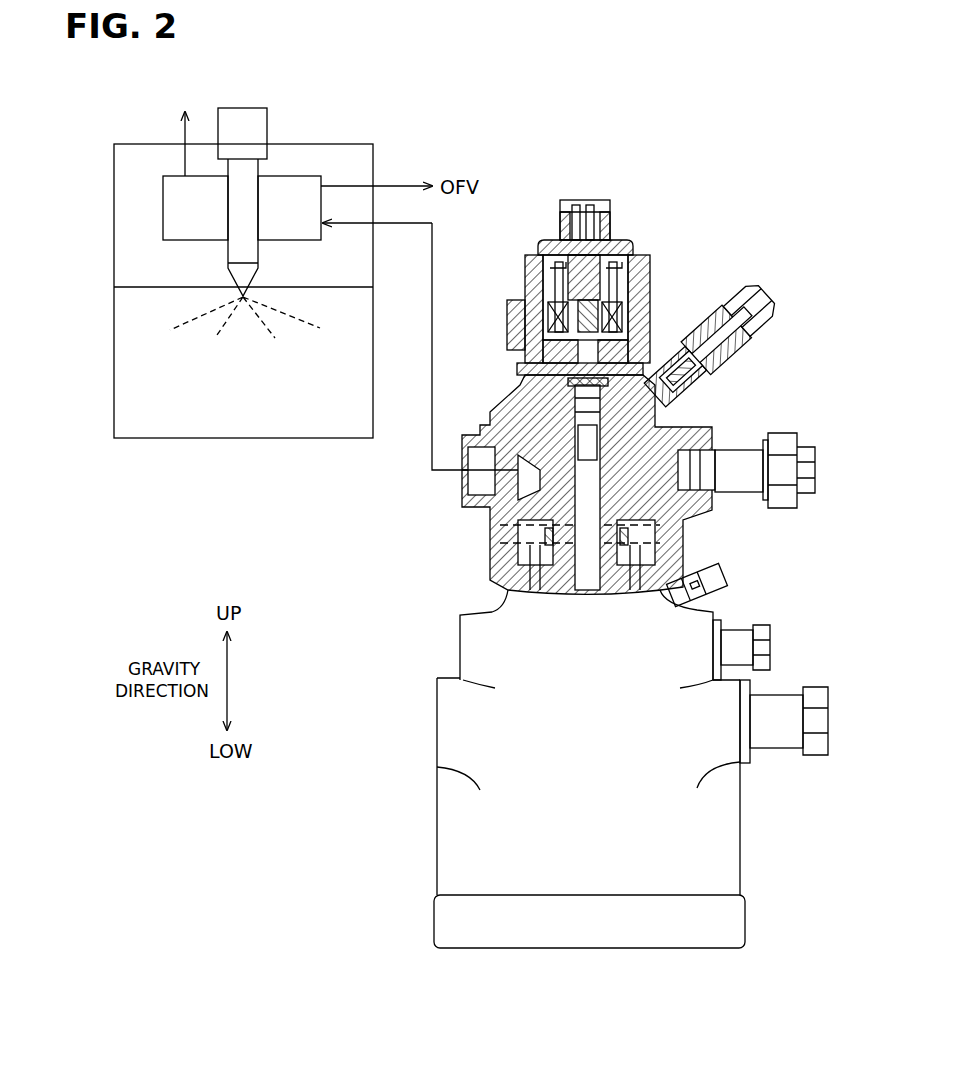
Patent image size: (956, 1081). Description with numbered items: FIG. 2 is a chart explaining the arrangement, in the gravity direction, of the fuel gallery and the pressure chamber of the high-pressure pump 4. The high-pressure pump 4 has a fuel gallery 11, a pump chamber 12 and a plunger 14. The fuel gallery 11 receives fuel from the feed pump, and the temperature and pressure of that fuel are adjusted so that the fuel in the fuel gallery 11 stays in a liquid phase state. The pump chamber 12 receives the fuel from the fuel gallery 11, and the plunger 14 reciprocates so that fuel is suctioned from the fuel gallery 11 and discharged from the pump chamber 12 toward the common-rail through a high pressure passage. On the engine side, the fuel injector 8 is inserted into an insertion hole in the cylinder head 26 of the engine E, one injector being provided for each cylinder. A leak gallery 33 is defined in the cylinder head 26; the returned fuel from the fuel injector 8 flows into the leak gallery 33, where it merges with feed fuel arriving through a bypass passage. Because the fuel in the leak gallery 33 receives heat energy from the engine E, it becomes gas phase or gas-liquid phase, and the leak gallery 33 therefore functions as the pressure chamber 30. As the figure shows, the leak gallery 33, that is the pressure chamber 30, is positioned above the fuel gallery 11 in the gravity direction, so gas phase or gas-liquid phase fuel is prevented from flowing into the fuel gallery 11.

The high-pressure pump 4 is at (703, 232).
The fuel injector 8 is at (268, 124).
The leak gallery 33 is at (302, 185).
The pressure chamber 30 is at (329, 169).
The cylinder head 26 is at (128, 259).
The engine E is at (112, 373).
The fuel gallery 11 is at (527, 483).
The pump chamber 12 is at (587, 420).
The plunger 14 is at (588, 447).